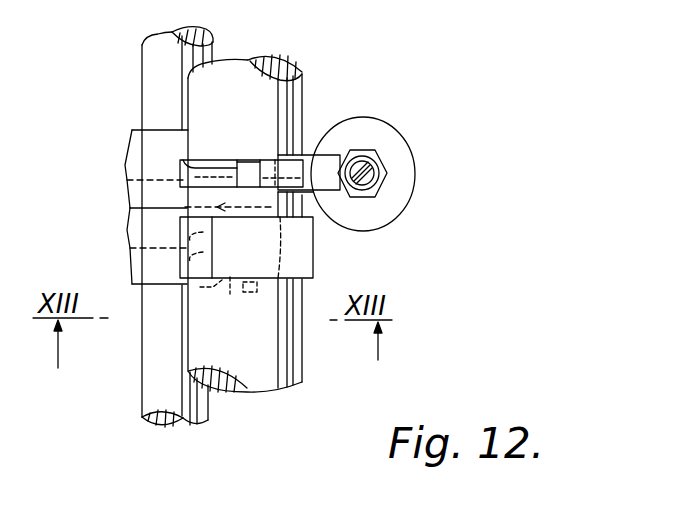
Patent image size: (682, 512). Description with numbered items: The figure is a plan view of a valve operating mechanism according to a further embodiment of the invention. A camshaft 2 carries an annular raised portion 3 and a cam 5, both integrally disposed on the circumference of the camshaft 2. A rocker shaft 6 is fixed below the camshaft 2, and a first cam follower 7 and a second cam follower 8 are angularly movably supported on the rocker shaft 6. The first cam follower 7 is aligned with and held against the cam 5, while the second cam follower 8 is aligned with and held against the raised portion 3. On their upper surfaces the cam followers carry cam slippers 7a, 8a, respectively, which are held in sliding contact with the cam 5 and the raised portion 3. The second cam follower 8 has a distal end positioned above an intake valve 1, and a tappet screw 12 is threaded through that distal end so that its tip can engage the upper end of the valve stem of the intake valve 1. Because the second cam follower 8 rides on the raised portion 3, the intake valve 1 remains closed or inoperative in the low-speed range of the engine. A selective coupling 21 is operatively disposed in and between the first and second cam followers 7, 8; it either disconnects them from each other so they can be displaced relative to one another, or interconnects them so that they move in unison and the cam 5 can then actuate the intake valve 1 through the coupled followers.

The intake valve 1 is at (398, 128).
The camshaft 2 is at (291, 58).
The annular raised portion 3 is at (215, 158).
The cam 5 is at (201, 279).
The rocker shaft 6 is at (142, 362).
The first cam follower 7 is at (126, 233).
The cam slipper 7a is at (232, 280).
The second cam follower 8 is at (127, 157).
The cam slipper 8a is at (250, 160).
The tappet screw 12 is at (376, 172).
The selective coupling 21 is at (250, 292).